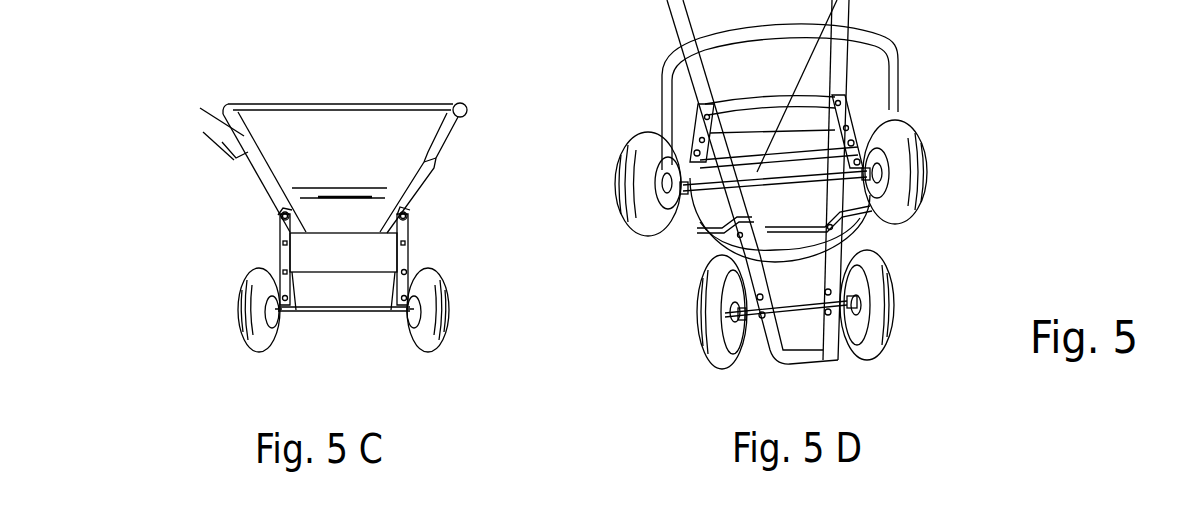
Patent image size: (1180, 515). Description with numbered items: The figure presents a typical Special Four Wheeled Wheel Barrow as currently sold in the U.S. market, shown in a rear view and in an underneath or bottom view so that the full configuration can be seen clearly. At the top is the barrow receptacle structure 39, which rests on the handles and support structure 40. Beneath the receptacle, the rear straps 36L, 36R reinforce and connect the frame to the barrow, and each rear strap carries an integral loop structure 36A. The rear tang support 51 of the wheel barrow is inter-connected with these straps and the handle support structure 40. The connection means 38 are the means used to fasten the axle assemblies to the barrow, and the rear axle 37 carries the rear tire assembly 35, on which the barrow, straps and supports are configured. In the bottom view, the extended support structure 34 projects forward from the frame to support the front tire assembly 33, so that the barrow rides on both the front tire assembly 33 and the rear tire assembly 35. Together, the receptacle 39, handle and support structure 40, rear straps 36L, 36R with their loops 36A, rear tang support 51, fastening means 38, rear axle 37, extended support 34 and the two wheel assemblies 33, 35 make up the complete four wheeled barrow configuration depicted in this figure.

In FIG. 5D, the front tire assembly 33 is at (890, 313).
In FIG. 5D, the support structure (extended) 34 is at (830, 358).
In FIG. 5C, the rear tire assembly 35 is at (252, 348).
In FIG. 5D, the rear tire assembly 35 is at (927, 152).
In FIG. 5C, the integral loop structure on rear straps 36A is at (413, 318).
In FIG. 5D, the integral loop structure on rear straps 36A is at (687, 185).
In FIG. 5C, the rear strap (left) 36L is at (280, 257).
In FIG. 5C, the rear strap (right) 36R is at (410, 218).
In FIG. 5D, the rear strap (right) 36R is at (847, 137).
In FIG. 5C, the rear axle 37 is at (318, 313).
In FIG. 5C, the means to fasten front and rear axle assemblies to barrow 38 is at (410, 272).
In FIG. 5D, the means to fasten front and rear axle assemblies to barrow 38 is at (853, 140).
In FIG. 5C, the barrow receptacle structure 39 is at (318, 140).
In FIG. 5D, the barrow receptacle structure 39 is at (685, 93).
In FIG. 5C, the handles and support structure 40 is at (253, 175).
In FIG. 5D, the handles and support structure 40 is at (685, 24).
In FIG. 5C, the rear tang support of typical wheel barrow 51 is at (282, 220).
In FIG. 5D, the rear tang support of typical wheel barrow 51 is at (843, 127).